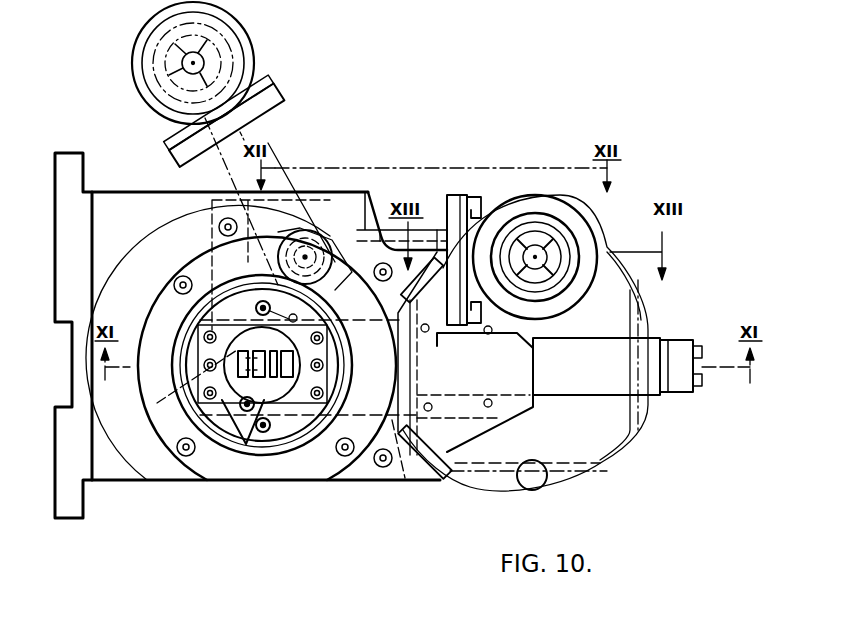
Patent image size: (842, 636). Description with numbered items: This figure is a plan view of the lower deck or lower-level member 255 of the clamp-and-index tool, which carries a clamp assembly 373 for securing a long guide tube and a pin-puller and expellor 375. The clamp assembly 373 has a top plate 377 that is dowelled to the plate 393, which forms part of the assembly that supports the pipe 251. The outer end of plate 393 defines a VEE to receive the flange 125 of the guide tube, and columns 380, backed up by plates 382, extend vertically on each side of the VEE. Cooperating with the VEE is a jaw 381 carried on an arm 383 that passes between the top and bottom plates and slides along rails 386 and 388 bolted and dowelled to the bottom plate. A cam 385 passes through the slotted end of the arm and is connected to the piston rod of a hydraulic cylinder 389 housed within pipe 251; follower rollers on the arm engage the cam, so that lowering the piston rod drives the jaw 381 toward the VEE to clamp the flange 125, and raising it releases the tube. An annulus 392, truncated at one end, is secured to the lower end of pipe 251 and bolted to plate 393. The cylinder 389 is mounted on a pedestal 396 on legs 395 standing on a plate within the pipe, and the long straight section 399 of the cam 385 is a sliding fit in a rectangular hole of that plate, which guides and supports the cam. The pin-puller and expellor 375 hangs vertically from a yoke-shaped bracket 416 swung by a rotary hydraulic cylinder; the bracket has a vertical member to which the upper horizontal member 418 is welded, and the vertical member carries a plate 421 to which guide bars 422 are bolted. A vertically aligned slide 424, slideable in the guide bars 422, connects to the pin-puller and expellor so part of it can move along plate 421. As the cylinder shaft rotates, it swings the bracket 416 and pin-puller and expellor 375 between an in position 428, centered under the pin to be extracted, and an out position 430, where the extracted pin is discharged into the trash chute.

The flange 125 is at (628, 458).
The pipe 251 is at (172, 326).
The lower deck or lower-level member 255 is at (651, 506).
The clamp assembly 373 is at (558, 456).
The pin-puller and expellor 375 is at (322, 47).
The top plate 377 is at (545, 338).
The columns 380 is at (440, 318).
The jaw 381 is at (675, 340).
The plates 382 is at (447, 475).
The arm 383 is at (614, 380).
The cam 385 is at (286, 478).
The rail 386 is at (325, 238).
The rail 388 is at (407, 480).
The hydraulic cylinder 389 is at (218, 258).
The annulus 392 is at (232, 478).
The plate 393 is at (378, 228).
The legs 395 is at (168, 438).
The pedestal 396 is at (307, 456).
The long straight section 399 is at (158, 402).
The bracket 416 is at (218, 175).
The upper horizontal member 418 is at (437, 230).
The plate 421 is at (283, 100).
The guide bars 422 is at (278, 80).
The slide 424 is at (507, 200).
The in position 428 is at (424, 196).
The out position 430 is at (342, 140).